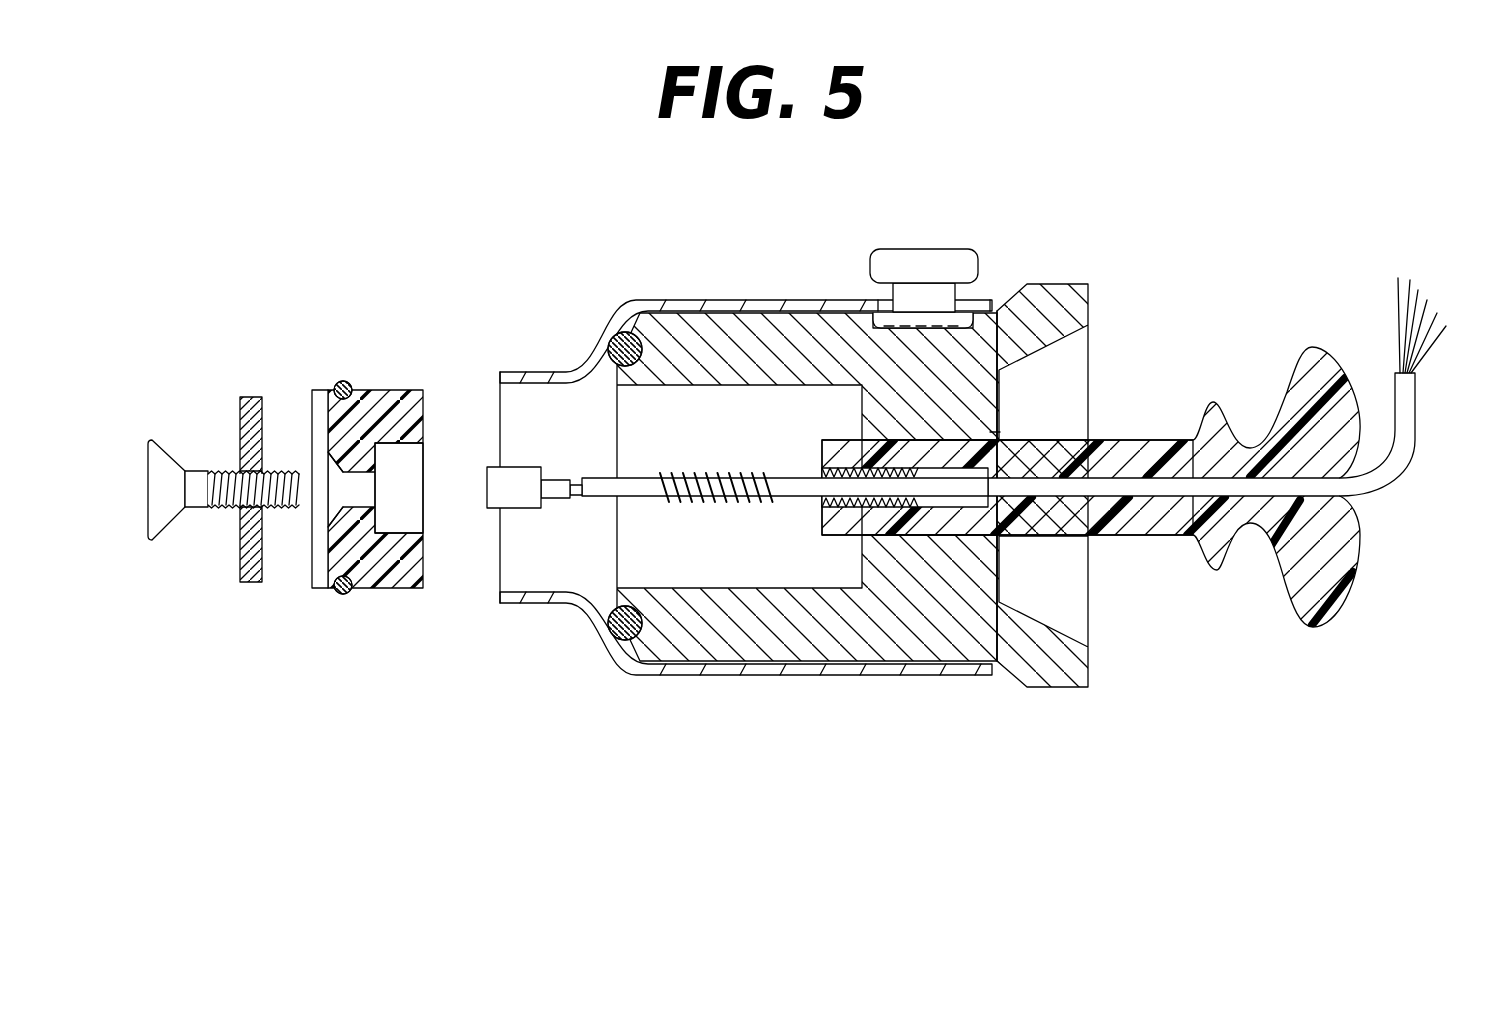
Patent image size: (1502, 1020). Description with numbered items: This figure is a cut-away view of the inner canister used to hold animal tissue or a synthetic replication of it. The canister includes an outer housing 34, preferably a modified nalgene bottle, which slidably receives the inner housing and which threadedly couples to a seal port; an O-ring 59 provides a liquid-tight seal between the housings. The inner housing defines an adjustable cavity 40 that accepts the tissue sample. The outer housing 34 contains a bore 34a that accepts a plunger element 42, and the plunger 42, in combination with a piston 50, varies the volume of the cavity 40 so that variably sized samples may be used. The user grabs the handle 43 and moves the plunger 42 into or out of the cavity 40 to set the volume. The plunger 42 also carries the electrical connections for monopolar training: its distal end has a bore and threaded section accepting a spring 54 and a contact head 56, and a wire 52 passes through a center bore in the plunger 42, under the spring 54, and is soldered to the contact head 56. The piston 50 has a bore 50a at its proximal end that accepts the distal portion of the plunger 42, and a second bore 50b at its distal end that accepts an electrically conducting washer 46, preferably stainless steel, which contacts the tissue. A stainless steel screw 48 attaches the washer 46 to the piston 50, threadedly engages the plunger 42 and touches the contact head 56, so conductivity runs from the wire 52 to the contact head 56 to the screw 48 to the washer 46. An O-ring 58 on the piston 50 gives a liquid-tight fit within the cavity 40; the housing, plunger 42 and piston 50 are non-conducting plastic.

The outer housing 34 is at (792, 299).
The bore 34a is at (990, 432).
The adjustable cavity 40 is at (724, 560).
The plunger element 42 is at (1120, 535).
The handle 43 is at (1285, 383).
The electrically conducting washer 46 is at (250, 582).
The screw 48 is at (255, 397).
The piston 50 is at (369, 495).
The bore 50a is at (407, 480).
The second bore 50b is at (327, 557).
The wire 52 is at (1397, 453).
The spring 54 is at (727, 473).
The contact head 56 is at (500, 510).
The O-ring 58 is at (335, 594).
The O-ring 59 is at (612, 642).